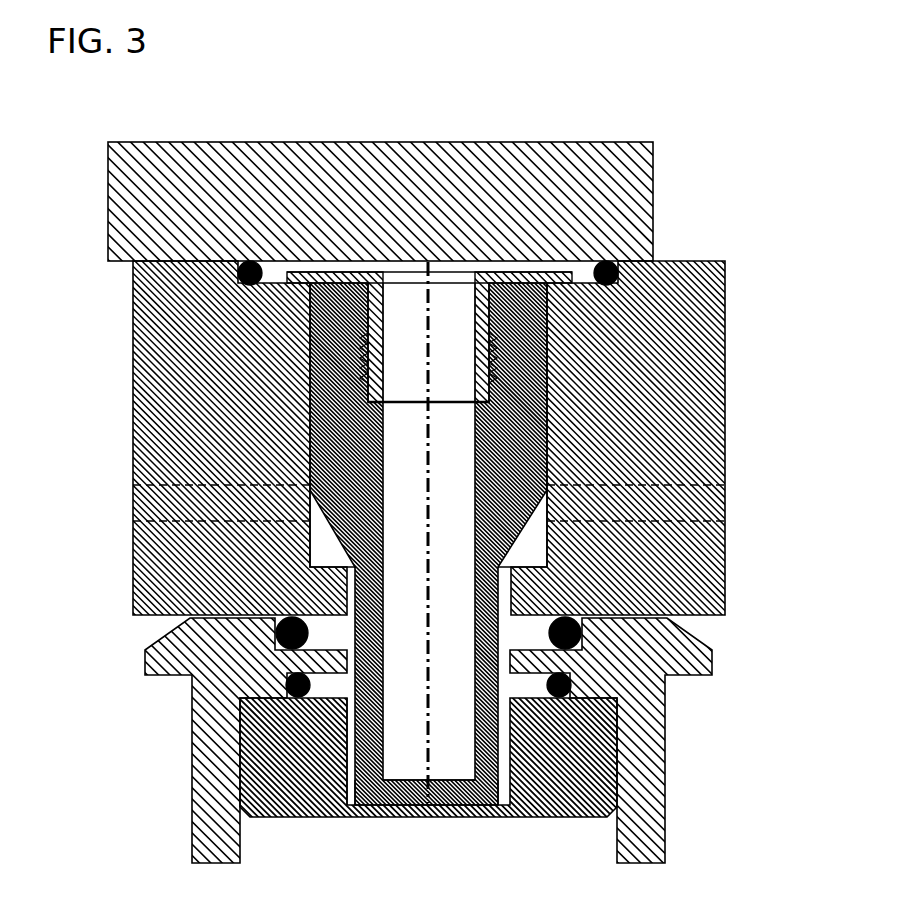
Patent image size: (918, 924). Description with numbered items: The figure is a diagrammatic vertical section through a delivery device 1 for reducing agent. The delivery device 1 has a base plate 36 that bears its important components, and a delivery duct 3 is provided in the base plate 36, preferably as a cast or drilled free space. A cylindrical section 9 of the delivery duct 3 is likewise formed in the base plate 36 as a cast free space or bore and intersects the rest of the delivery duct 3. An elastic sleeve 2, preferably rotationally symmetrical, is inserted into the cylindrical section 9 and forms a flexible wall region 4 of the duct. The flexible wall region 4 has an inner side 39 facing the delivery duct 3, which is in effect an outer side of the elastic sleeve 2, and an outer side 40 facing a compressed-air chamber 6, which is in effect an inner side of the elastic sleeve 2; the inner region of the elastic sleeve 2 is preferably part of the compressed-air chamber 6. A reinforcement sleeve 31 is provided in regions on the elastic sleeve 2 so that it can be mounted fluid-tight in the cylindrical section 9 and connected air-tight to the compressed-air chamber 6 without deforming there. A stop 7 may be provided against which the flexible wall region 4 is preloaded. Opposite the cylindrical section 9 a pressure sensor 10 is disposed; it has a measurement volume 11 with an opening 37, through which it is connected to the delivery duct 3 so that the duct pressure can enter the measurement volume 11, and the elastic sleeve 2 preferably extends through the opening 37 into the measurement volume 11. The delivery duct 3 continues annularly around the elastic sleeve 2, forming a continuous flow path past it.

The delivery device 1 is at (740, 138).
The elastic sleeve 2 is at (503, 757).
The delivery duct 3 is at (678, 484).
The flexible wall region 4 is at (503, 783).
The compressed-air chamber 6 is at (408, 322).
The stop 7 is at (547, 388).
The cylindrical section 9 is at (312, 546).
The pressure sensor 10 is at (302, 817).
The measurement volume 11 is at (349, 780).
The reinforcement sleeve 31 is at (473, 378).
The base plate 36 is at (133, 393).
The opening 37 is at (348, 700).
The inner side 39 is at (330, 532).
The outer side 40 is at (394, 543).